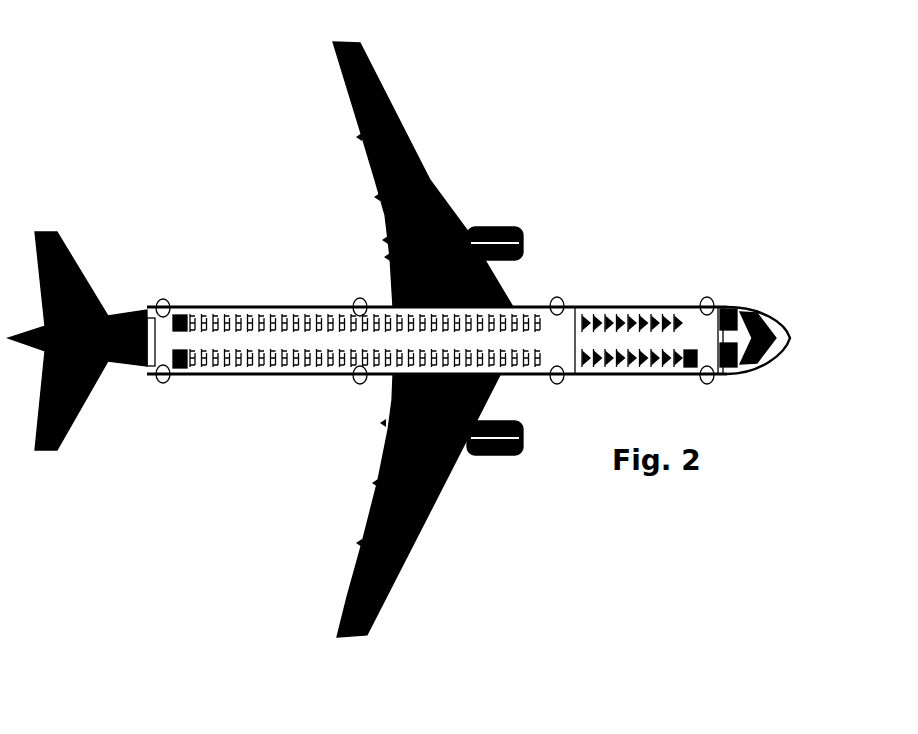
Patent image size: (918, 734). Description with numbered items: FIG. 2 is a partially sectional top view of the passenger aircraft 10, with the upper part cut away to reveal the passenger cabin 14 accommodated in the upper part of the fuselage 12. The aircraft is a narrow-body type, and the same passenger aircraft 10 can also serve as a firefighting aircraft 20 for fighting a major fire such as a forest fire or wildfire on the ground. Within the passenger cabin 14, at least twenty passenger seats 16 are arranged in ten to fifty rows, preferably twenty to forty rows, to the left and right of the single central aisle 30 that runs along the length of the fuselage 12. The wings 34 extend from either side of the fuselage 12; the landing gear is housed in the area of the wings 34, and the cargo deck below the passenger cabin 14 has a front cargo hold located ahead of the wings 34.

The passenger aircraft 10 is at (728, 428).
The fuselage 12 is at (285, 377).
The passenger cabin 14 is at (510, 340).
The passenger seats 16 is at (240, 348).
The firefighting aircraft 20 is at (662, 175).
The single central aisle 30 is at (350, 340).
The wings 34 is at (370, 165).